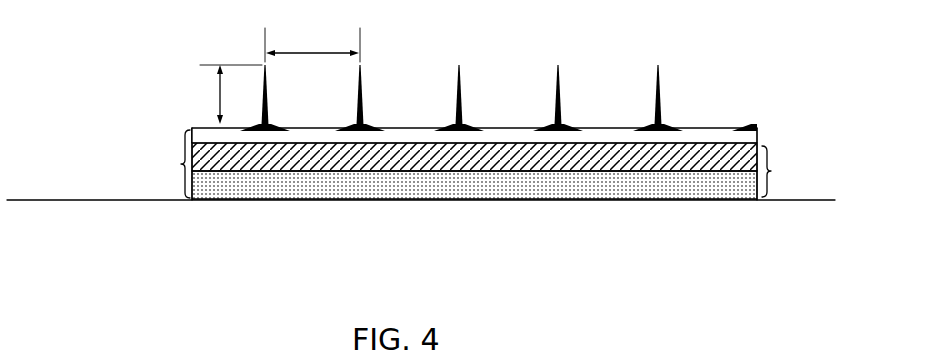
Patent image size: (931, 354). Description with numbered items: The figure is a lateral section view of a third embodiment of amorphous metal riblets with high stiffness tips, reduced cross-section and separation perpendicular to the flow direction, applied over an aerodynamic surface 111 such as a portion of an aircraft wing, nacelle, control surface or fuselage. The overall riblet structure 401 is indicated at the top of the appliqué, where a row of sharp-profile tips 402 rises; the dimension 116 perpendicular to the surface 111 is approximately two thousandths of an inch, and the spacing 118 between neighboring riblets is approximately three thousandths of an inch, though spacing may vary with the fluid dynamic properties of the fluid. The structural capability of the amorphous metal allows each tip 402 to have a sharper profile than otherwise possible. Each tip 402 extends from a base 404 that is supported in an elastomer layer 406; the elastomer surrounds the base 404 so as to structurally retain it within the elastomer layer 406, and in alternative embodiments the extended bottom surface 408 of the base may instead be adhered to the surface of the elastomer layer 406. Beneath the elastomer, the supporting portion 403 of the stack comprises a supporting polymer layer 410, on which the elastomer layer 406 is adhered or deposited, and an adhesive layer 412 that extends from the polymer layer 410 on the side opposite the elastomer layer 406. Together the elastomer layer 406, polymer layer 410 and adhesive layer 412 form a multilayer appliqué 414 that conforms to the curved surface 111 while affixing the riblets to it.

The surface 111 is at (35, 200).
The dimension 116 is at (218, 81).
The spacing 118 is at (281, 47).
The microneedle array 401 is at (766, 132).
The tips 402 is at (461, 88).
The substrate 403 is at (784, 172).
The base 404 is at (470, 126).
The elastomer layer 406 is at (600, 127).
The extended bottom surface 408 is at (468, 129).
The polymer layer 410 is at (192, 160).
The adhesive layer 412 is at (192, 188).
The multilayer appliqué 414 is at (180, 163).